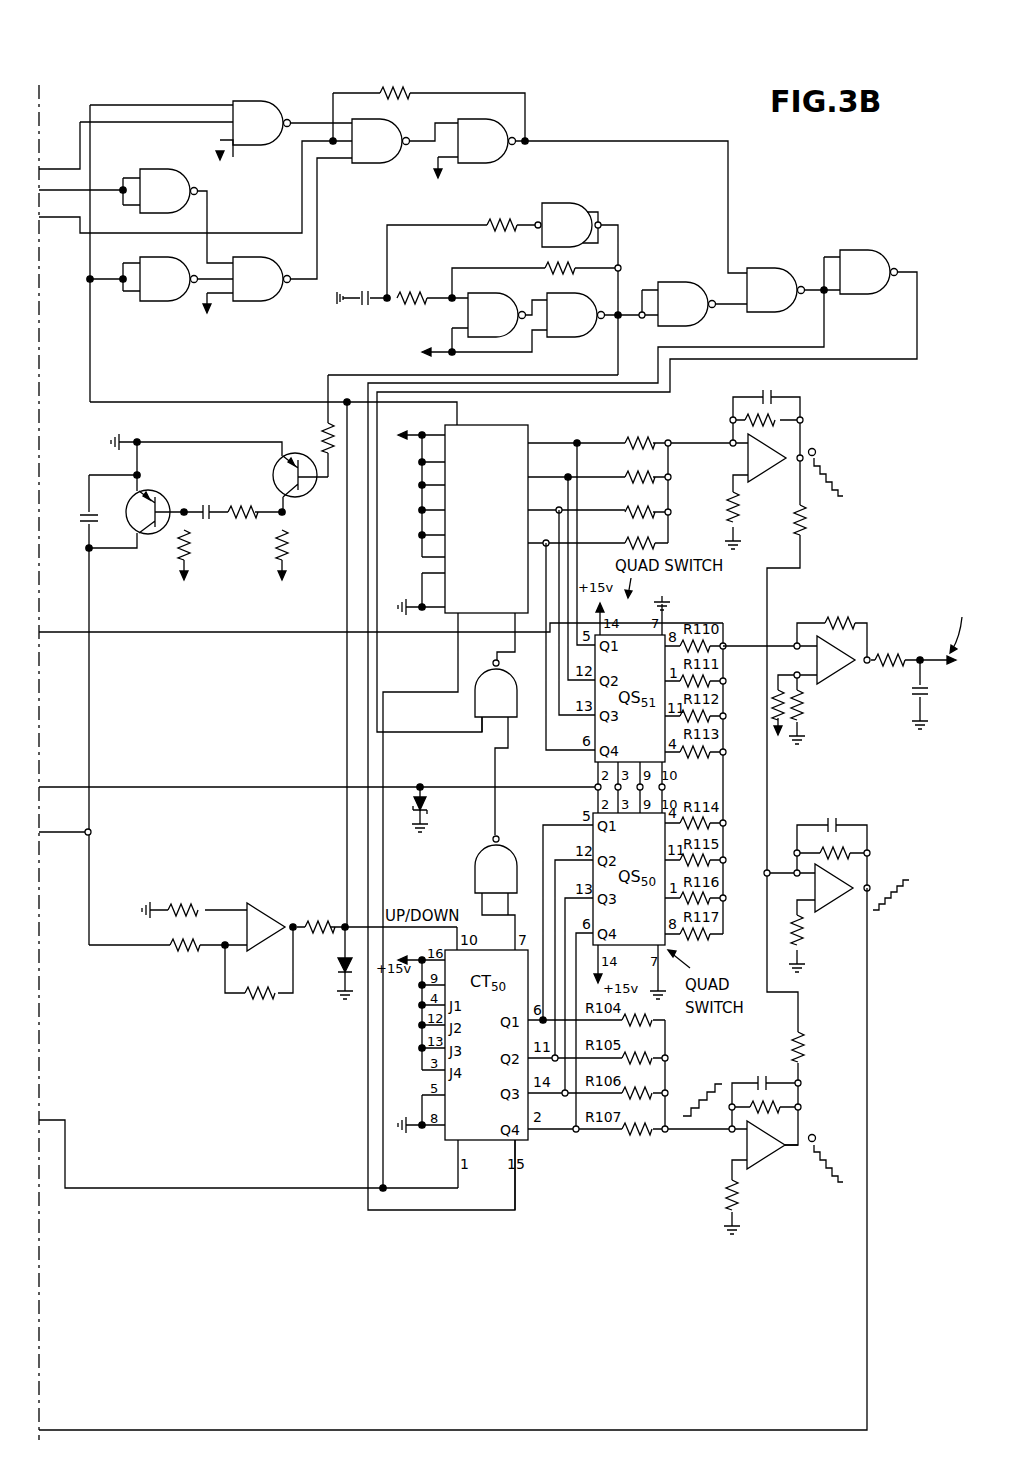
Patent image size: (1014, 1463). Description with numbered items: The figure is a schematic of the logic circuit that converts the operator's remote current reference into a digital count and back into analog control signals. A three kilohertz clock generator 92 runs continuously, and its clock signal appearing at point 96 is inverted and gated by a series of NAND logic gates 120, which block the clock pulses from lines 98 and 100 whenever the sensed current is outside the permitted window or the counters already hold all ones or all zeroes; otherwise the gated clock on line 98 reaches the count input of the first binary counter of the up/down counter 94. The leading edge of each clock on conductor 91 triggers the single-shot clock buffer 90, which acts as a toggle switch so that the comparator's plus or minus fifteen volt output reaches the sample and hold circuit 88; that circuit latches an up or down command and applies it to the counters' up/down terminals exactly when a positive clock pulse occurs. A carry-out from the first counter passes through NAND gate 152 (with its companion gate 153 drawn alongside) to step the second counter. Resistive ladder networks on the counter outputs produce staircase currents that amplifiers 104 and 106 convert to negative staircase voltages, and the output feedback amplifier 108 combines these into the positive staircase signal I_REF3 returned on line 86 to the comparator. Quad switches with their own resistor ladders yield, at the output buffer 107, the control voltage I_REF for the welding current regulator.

The line 86 is at (182, 1430).
The sample and hold circuit 88 is at (248, 964).
The clock buffer 90 is at (204, 689).
The conductor 91 is at (328, 386).
The clock generator 92 is at (518, 318).
The up/down counter 94 is at (554, 794).
The point 96 is at (619, 319).
The line 98 is at (824, 322).
The line 100 is at (917, 331).
The amplifier 104 is at (772, 446).
The amplifier 106 is at (750, 1168).
The output buffer 107 is at (849, 677).
The output feedback amplifier 108 is at (816, 906).
The logic gates 120 is at (583, 108).
The NAND gate 152 is at (476, 695).
The logic gate LG53 153 is at (476, 871).